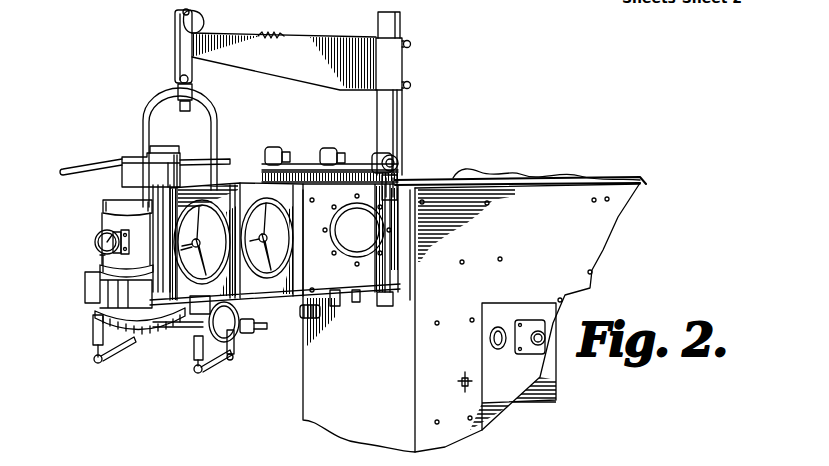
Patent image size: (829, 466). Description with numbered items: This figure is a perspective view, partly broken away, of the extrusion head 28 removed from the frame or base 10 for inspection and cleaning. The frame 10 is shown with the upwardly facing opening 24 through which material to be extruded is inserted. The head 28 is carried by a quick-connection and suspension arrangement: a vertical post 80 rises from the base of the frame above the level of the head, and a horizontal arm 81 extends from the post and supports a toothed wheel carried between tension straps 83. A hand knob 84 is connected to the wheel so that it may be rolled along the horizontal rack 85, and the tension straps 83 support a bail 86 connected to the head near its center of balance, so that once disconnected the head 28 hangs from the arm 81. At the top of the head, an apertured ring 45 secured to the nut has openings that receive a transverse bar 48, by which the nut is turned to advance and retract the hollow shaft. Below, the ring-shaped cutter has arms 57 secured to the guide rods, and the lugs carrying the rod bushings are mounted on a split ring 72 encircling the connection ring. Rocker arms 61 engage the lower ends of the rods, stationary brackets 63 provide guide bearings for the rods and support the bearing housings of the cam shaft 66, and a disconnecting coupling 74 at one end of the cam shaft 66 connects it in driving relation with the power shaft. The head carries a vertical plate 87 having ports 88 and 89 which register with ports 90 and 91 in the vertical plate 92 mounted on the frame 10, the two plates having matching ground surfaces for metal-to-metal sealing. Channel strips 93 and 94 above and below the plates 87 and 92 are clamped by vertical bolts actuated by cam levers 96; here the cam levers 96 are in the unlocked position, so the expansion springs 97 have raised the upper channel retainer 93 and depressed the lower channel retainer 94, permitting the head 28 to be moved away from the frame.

The frame or base 10 is at (310, 398).
The upwardly facing opening 24 is at (482, 178).
The extrusion head 28 is at (94, 219).
The apertured ring 45 is at (124, 160).
The transverse bar 48 is at (72, 168).
The arms 57 is at (104, 198).
The rocker arms 61 is at (113, 362).
The stationary brackets 63 is at (234, 360).
The cam shaft 66 is at (258, 336).
The split ring 72 is at (95, 305).
The disconnecting coupling 74 is at (304, 318).
The vertical post 80 is at (390, 106).
The horizontal arm 81 is at (330, 40).
The tension straps 83 is at (176, 63).
The hand knob 84 is at (203, 25).
The horizontal rack 85 is at (268, 38).
The bail 86 is at (218, 108).
The vertical plate 87 is at (223, 188).
The port 88 is at (182, 326).
The port 89 is at (268, 252).
The registering port 90 is at (366, 232).
The registering port 91 is at (302, 208).
The vertical plate 92 is at (358, 300).
The channel strip 93 is at (400, 178).
The channel strip 94 is at (386, 306).
The cam levers 96 is at (272, 148).
The expansion springs 97 is at (338, 292).